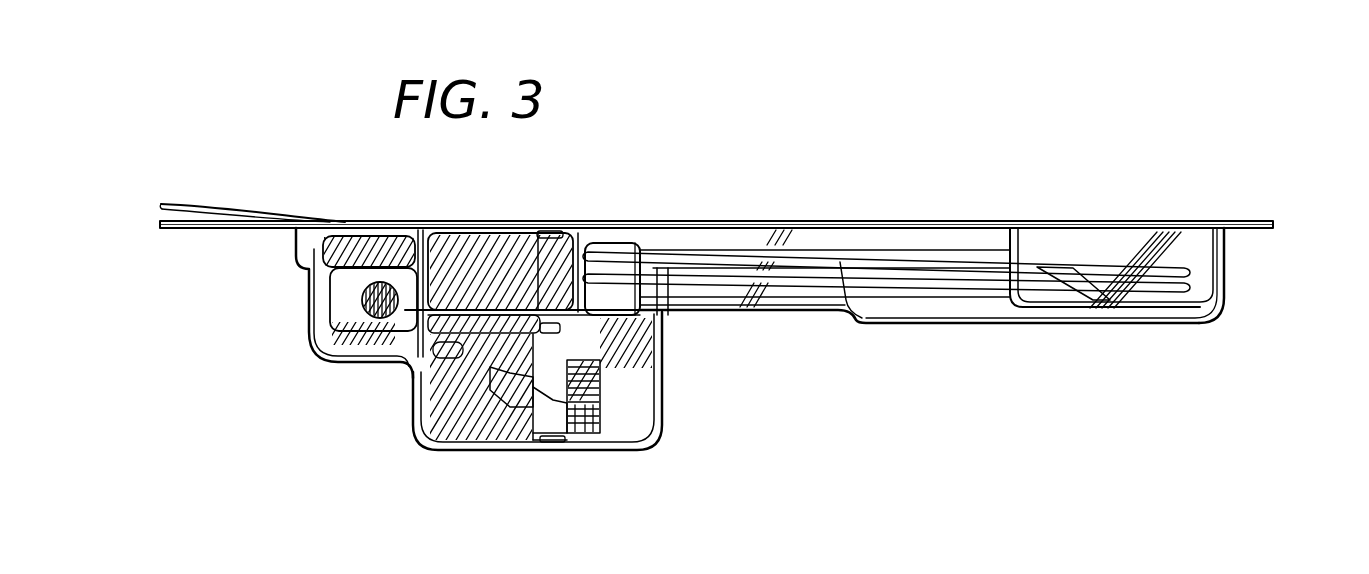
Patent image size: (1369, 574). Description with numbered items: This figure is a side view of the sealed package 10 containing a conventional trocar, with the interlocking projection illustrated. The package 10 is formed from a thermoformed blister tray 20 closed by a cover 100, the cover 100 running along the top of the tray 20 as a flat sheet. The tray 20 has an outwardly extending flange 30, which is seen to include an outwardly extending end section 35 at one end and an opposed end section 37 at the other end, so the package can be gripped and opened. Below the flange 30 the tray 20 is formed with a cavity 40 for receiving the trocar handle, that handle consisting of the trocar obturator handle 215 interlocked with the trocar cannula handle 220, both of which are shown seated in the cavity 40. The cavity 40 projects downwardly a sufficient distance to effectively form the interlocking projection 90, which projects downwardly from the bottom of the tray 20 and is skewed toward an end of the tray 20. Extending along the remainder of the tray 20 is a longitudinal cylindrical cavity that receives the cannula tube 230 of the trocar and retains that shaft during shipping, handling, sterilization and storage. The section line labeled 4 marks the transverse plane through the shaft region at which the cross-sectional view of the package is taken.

The package 10 is at (1062, 175).
The thermoformed blister tray 20 is at (884, 343).
The outwardly extending flange 30 is at (1099, 221).
The outwardly extending end section 35 is at (165, 229).
The opposed end section 37 is at (1284, 222).
The cavity 40 is at (497, 430).
The interlocking projection 90 is at (640, 450).
The cover 100 is at (906, 222).
The trocar obturator handle 215 is at (396, 250).
The trocar cannula handle 220 is at (512, 266).
The cannula tube 230 is at (1063, 300).
The section line 4- 4 is at (772, 206).